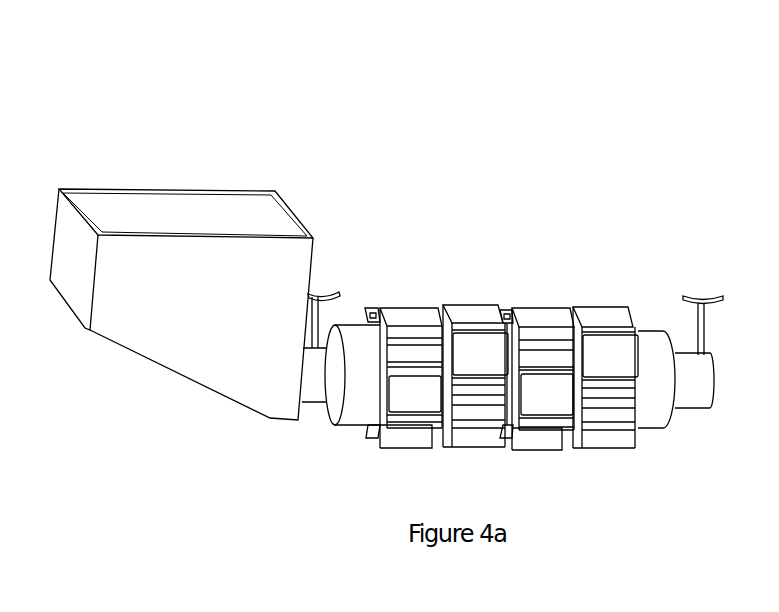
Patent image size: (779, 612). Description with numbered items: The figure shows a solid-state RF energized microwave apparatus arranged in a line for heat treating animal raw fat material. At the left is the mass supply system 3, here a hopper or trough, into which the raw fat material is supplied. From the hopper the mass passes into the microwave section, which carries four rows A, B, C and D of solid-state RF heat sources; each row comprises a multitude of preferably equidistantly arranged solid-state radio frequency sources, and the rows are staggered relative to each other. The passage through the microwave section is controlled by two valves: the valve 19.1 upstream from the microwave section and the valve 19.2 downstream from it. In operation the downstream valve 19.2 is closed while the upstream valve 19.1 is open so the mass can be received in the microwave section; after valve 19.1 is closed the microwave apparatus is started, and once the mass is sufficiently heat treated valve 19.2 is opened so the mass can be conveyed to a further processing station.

The mass supply system 3 is at (82, 207).
The valve 19.1 is at (325, 280).
The valve 19.2 is at (700, 282).
The row A is at (405, 318).
The row B is at (474, 318).
The row C is at (547, 318).
The row D is at (610, 317).